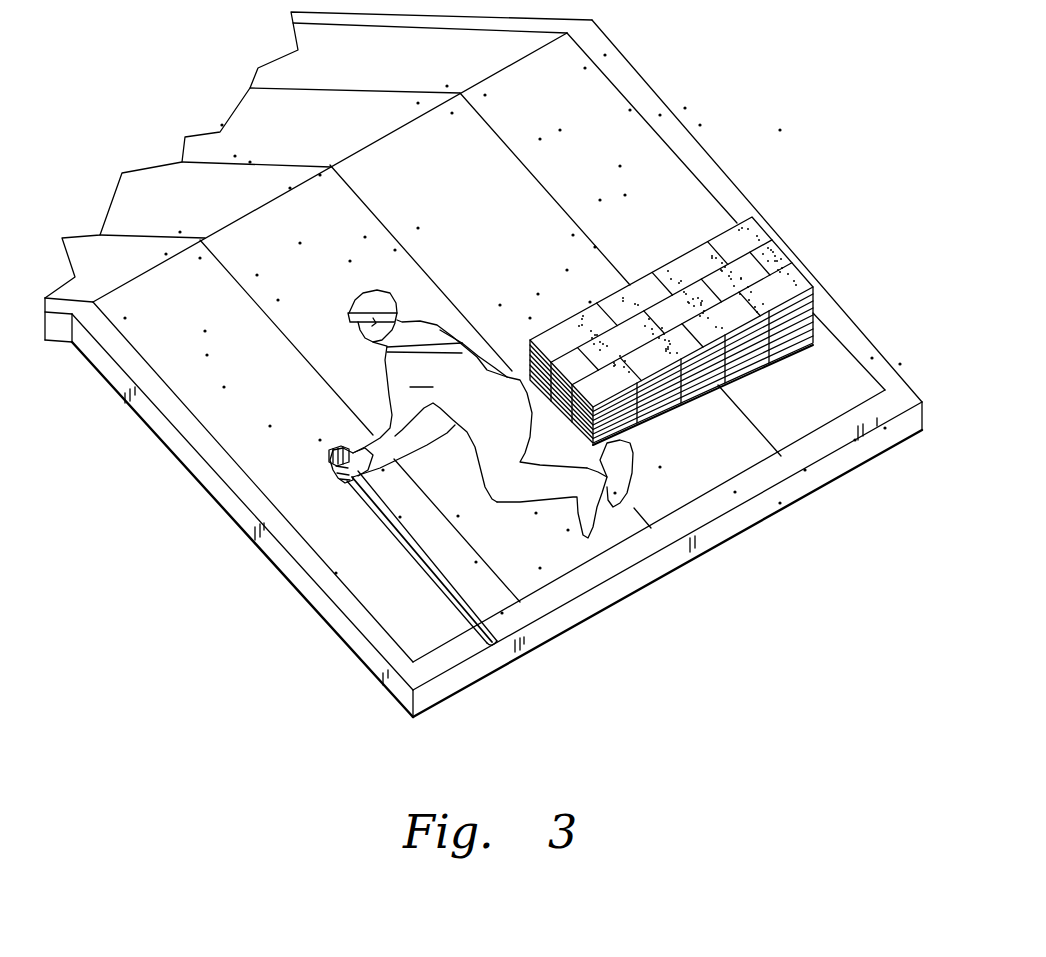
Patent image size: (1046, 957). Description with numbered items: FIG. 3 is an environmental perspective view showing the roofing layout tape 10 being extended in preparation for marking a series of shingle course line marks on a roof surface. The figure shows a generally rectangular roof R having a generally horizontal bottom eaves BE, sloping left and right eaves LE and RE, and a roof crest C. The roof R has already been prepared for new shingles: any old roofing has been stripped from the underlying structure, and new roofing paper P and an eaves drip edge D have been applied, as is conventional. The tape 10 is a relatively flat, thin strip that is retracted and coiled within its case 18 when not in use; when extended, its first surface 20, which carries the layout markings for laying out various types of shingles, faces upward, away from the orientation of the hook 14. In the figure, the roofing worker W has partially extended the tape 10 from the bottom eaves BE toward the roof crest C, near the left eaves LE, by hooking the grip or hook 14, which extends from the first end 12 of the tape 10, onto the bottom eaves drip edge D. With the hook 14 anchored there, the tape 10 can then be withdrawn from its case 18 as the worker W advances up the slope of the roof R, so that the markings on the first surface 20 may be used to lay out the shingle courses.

The roofing layout tape 10 is at (355, 542).
The first end 12 is at (484, 637).
The hook 14 is at (497, 646).
The case 18 is at (324, 458).
The first surface 20 is at (398, 537).
The roof crest C is at (367, 143).
The roofing paper P is at (188, 363).
The left eaves LE is at (223, 514).
The right eaves RE is at (706, 152).
The bottom eaves BE is at (685, 561).
The eaves drip edge D is at (718, 180).
The roofing worker W is at (481, 414).
The roof R is at (132, 482).